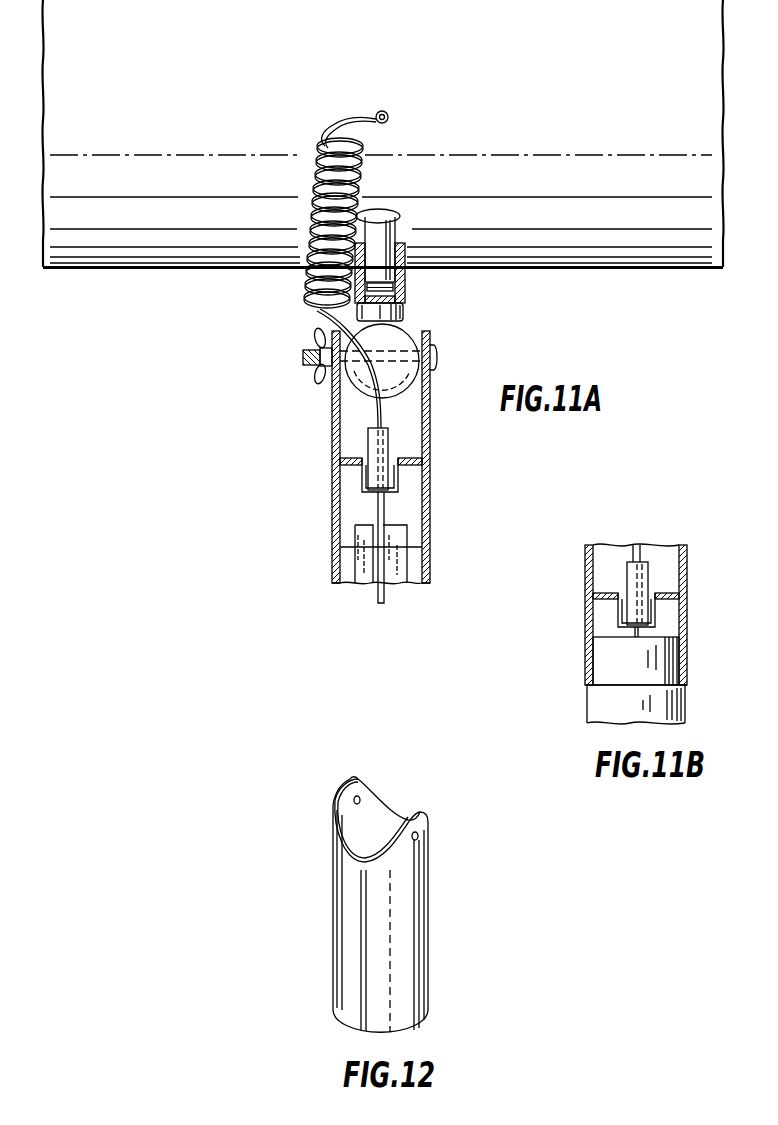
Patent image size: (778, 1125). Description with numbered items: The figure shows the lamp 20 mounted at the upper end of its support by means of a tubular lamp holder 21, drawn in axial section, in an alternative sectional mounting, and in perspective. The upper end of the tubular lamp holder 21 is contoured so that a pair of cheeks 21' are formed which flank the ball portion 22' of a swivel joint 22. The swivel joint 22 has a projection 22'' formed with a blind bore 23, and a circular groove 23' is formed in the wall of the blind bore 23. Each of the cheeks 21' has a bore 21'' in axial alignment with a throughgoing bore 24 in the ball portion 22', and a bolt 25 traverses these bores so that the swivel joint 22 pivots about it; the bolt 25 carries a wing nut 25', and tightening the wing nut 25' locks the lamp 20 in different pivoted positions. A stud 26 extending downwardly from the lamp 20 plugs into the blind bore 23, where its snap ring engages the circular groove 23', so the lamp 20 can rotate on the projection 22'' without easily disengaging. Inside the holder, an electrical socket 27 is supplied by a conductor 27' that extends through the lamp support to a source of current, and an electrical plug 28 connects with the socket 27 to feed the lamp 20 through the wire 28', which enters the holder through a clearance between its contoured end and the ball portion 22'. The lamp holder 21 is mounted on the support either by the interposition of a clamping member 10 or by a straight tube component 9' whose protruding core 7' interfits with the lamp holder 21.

In FIG. 11A, the lamp 20 is at (690, 237).
In FIG. 11A, the wire 28' is at (321, 208).
In FIG. 11A, the stud 26 is at (387, 253).
In FIG. 11A, the blind bore 23 is at (439, 253).
In FIG. 11A, the projection 22'' is at (417, 290).
In FIG. 11A, the circular groove 23' is at (436, 311).
In FIG. 11A, the swivel joint 22 is at (428, 321).
In FIG. 11A, the cheeks 21' is at (415, 361).
In FIG. 12, the cheeks 21' is at (380, 802).
In FIG. 11A, the throughgoing bore 24 is at (397, 360).
In FIG. 11A, the tubular lamp holder 21 is at (405, 457).
In FIG. 11B, the tubular lamp holder 21 is at (661, 614).
In FIG. 12, the tubular lamp holder 21 is at (405, 918).
In FIG. 11A, the bolt 25 is at (294, 370).
In FIG. 11A, the wing nut 25' is at (363, 393).
In FIG. 11A, the ball portion 22' is at (400, 379).
In FIG. 11A, the electrical plug 28 is at (331, 460).
In FIG. 11B, the electrical plug 28 is at (594, 585).
In FIG. 11A, the electrical socket 27 is at (348, 490).
In FIG. 11B, the electrical socket 27 is at (610, 615).
In FIG. 11A, the conductor 27' is at (333, 547).
In FIG. 11A, the clamping member 10 is at (337, 560).
In FIG. 11B, the protruding core 7' is at (612, 661).
In FIG. 11B, the straight tube component 9' is at (623, 704).
In FIG. 12, the bore 21'' is at (383, 824).